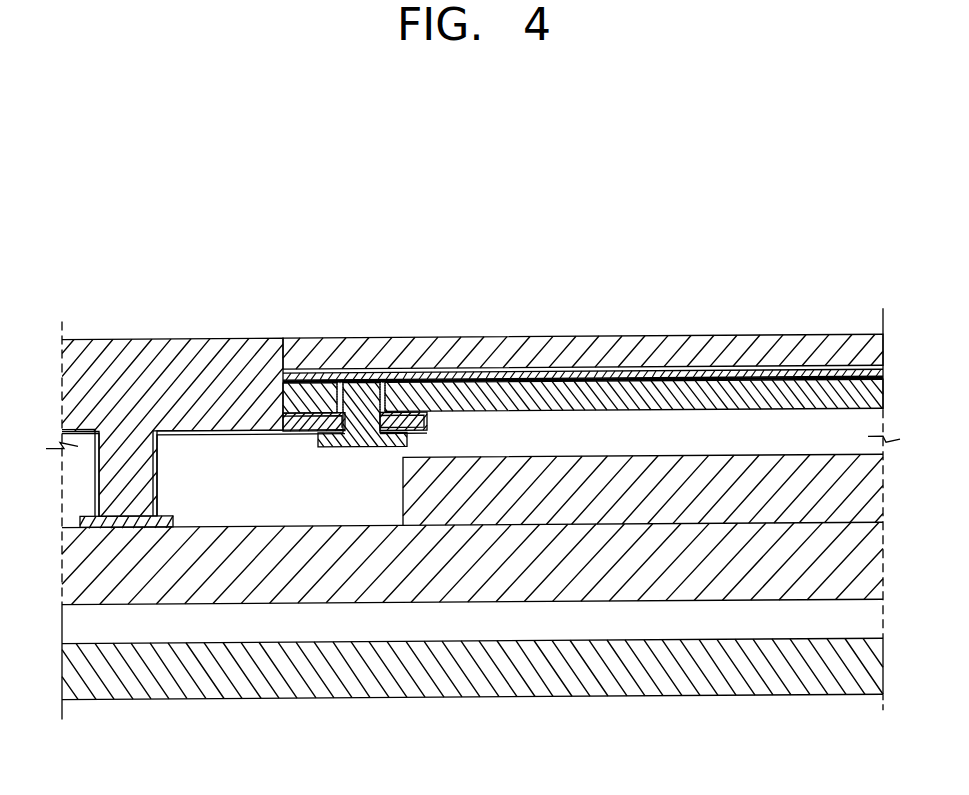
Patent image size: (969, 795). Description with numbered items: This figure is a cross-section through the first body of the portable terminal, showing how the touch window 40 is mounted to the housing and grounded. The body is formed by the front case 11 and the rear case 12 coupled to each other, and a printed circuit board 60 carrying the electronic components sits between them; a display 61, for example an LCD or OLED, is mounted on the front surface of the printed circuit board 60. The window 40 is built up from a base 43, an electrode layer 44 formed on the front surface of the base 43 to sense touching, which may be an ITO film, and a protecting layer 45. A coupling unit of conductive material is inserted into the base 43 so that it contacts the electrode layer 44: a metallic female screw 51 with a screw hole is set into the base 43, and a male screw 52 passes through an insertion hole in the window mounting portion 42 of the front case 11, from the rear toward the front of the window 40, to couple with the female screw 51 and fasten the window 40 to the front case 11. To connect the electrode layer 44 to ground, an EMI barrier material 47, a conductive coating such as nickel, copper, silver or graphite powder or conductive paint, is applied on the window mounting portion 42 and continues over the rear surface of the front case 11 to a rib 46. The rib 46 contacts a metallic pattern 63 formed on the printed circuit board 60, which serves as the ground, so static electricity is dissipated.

The front case 11 is at (147, 365).
The rear case 12 is at (695, 666).
The window 40 is at (583, 307).
The window mounting portion 42 is at (302, 423).
The base 43 is at (650, 397).
The electrode layer 44 is at (599, 378).
The protecting layer 45 is at (549, 352).
The rib 46 is at (98, 466).
The EMI barrier material 47 is at (244, 433).
The female screw 51 is at (393, 383).
The male screw 52 is at (356, 447).
The printed circuit board 60 is at (508, 567).
The display 61 is at (622, 498).
The metallic pattern 63 is at (128, 523).